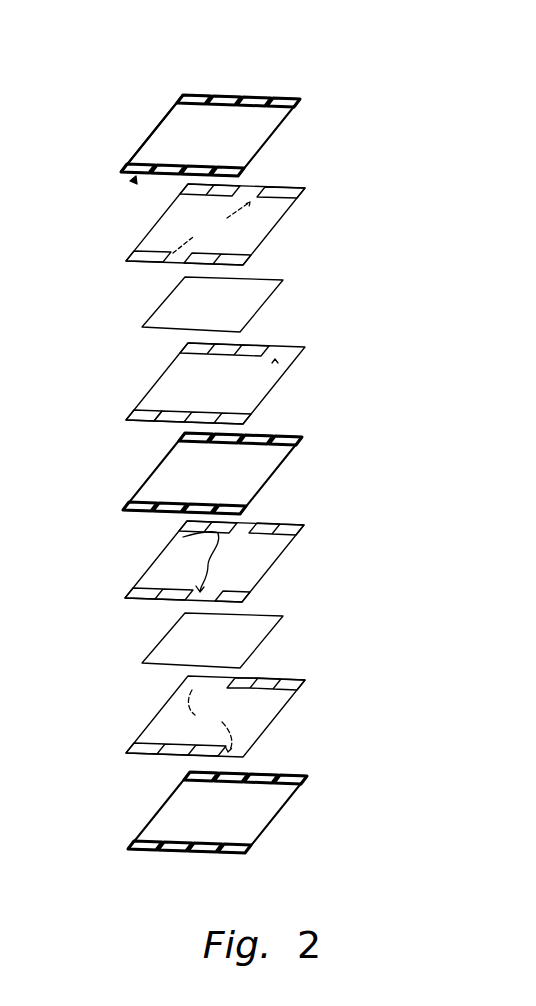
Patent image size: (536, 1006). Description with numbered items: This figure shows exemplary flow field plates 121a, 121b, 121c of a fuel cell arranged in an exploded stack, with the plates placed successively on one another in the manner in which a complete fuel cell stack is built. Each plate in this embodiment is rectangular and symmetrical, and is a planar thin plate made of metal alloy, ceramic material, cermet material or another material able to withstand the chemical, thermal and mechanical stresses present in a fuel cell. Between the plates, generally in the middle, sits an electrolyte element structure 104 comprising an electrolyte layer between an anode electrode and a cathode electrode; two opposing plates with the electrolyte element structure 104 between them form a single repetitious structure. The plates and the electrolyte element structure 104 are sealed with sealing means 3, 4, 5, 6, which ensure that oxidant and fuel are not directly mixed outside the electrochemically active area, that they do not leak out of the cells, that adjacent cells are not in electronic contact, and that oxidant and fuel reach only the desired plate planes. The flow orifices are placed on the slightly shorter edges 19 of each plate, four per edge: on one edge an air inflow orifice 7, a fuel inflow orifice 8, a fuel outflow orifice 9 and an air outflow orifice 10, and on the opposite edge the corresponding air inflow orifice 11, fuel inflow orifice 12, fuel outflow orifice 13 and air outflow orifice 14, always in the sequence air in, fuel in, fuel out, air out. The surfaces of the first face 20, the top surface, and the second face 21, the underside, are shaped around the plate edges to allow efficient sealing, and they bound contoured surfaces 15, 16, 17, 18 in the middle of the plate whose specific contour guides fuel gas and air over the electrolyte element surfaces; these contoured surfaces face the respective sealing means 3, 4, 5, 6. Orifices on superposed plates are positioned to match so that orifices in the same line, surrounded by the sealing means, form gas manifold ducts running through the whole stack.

The flow field plate 121a is at (262, 136).
The flow field plate 121b is at (258, 468).
The flow field plate 121c is at (260, 802).
The sealing means 3 is at (260, 237).
The sealing means 4 is at (268, 388).
The sealing means 5 is at (263, 572).
The sealing means 6 is at (270, 722).
The electrolyte element structure 104 is at (243, 300).
The inflow orifice for oxygen rich gas 7 is at (195, 96).
The inflow orifice for fuel 8 is at (222, 96).
The outflow orifice for fuel 9 is at (252, 97).
The outflow orifice for air 10 is at (279, 97).
The inflow orifice for oxygen rich gas 11 is at (143, 849).
The inflow orifice for fuel 12 is at (170, 850).
The outflow orifice for fuel 13 is at (200, 851).
The outflow orifice for air 14 is at (233, 853).
The contoured surface 15 is at (220, 220).
The contoured surface 16 is at (143, 407).
The contoured surface 17 is at (183, 537).
The contoured surface 18 is at (168, 700).
The shorter edge 19 is at (152, 178).
The first face 20 is at (165, 118).
The second face 21 is at (130, 181).